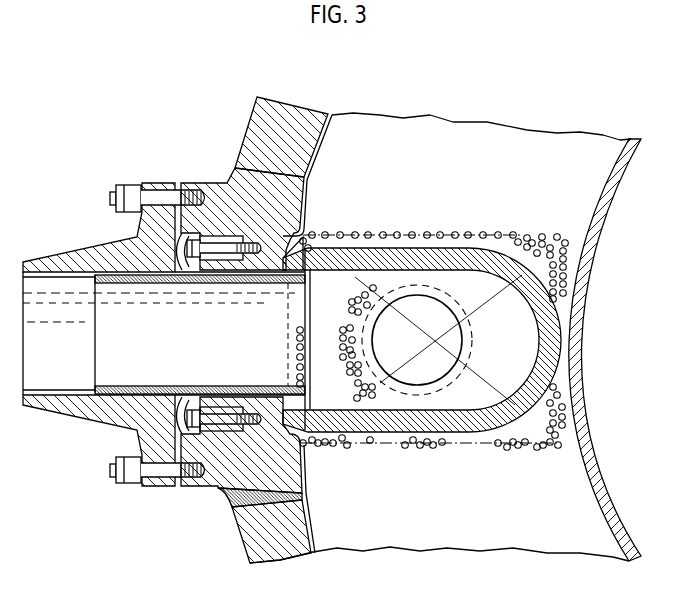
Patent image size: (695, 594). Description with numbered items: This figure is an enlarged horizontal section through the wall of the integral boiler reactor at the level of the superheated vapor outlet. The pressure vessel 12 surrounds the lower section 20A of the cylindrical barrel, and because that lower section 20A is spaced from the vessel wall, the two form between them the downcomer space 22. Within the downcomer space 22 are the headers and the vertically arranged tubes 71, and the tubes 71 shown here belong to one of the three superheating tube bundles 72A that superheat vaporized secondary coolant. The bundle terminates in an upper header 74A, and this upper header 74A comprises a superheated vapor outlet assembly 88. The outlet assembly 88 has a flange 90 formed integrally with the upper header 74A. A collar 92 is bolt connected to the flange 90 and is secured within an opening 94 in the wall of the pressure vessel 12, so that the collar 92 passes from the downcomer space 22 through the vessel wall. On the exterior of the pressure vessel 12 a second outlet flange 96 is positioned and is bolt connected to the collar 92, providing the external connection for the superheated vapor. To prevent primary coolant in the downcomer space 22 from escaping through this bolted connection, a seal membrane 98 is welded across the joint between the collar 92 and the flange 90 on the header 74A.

The pressure vessel 12 is at (263, 540).
The lower section of barrel 20A is at (603, 484).
The downcomer space 22 is at (450, 528).
The tubes 71 is at (436, 452).
The superheating tube bundles 72A is at (518, 452).
The upper header 74A is at (557, 327).
The superheated vapor outlet assembly 88 is at (170, 491).
The flange 90 is at (303, 237).
The collar 92 is at (203, 182).
The opening 94 is at (233, 497).
The second outlet flange 96 is at (113, 422).
The seal membrane 98 is at (182, 271).